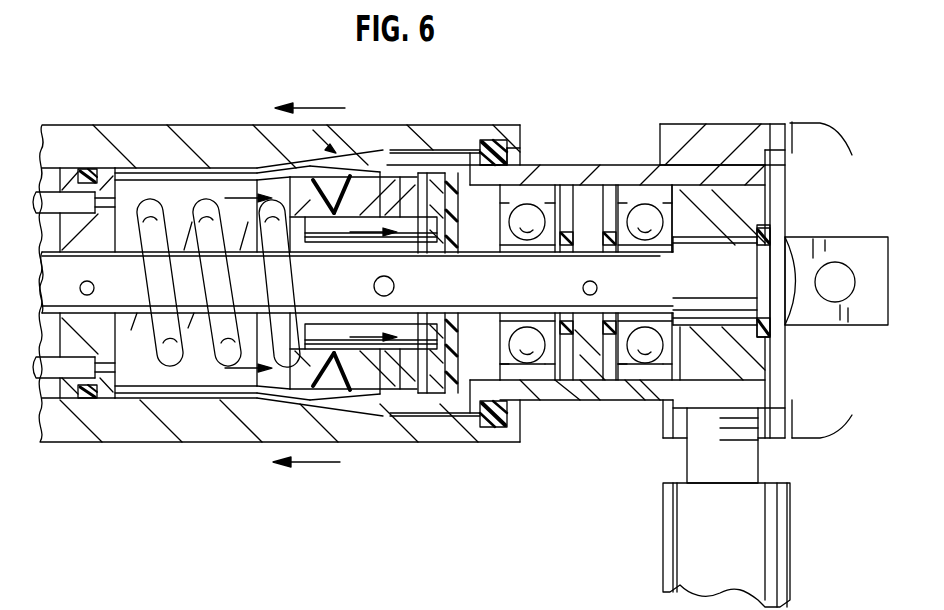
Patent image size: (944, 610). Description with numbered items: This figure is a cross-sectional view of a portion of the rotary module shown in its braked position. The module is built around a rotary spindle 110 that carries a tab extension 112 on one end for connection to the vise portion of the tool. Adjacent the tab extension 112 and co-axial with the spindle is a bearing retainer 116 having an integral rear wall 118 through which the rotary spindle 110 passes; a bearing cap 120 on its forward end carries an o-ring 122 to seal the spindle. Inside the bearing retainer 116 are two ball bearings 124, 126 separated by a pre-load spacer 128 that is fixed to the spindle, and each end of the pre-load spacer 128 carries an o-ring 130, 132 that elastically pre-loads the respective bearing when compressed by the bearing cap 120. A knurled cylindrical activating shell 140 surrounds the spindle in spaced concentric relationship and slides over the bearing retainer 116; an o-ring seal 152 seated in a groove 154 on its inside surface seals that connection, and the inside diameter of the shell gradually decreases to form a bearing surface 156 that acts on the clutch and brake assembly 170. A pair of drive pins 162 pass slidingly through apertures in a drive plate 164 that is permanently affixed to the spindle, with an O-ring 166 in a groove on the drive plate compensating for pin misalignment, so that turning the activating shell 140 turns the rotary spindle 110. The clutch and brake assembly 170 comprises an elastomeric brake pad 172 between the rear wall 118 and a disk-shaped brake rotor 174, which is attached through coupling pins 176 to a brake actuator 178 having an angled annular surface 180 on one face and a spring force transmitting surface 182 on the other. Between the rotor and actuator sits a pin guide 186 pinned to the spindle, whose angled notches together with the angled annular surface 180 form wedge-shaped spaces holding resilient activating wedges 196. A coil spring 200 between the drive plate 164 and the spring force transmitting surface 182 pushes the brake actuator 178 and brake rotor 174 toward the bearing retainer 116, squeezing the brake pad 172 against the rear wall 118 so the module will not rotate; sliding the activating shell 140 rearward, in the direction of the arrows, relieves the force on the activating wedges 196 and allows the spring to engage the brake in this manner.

The rotary spindle 110 is at (542, 252).
The tab extension 112 is at (833, 237).
The bearing retainer 116 is at (648, 200).
The rear wall 118 is at (452, 185).
The bearing cap 120 is at (708, 185).
The o-ring 122 is at (742, 200).
The ball bearing 124 is at (652, 185).
The ball bearing 126 is at (520, 200).
The pre-load spacer 128 is at (590, 373).
The o-ring 130 is at (608, 373).
The o-ring 132 is at (558, 373).
The activating shell 140 is at (110, 442).
The o-ring seal 152 is at (494, 140).
The groove 154 is at (508, 190).
The bearing surface 156 is at (382, 170).
The drive pins 162 is at (68, 198).
The drive plate 164 is at (108, 225).
The O-ring 166 is at (93, 168).
The clutch and brake assembly 170 is at (332, 160).
The brake pad 172 is at (452, 170).
The brake rotor 174 is at (440, 370).
The coupling pins 176 is at (405, 350).
The brake actuator 178 is at (272, 400).
The angled annular surface 180 is at (320, 373).
The spring force transmitting surface 182 is at (262, 168).
The pin guide 186 is at (360, 180).
The activating wedges 196 is at (360, 130).
The coil spring 200 is at (198, 380).